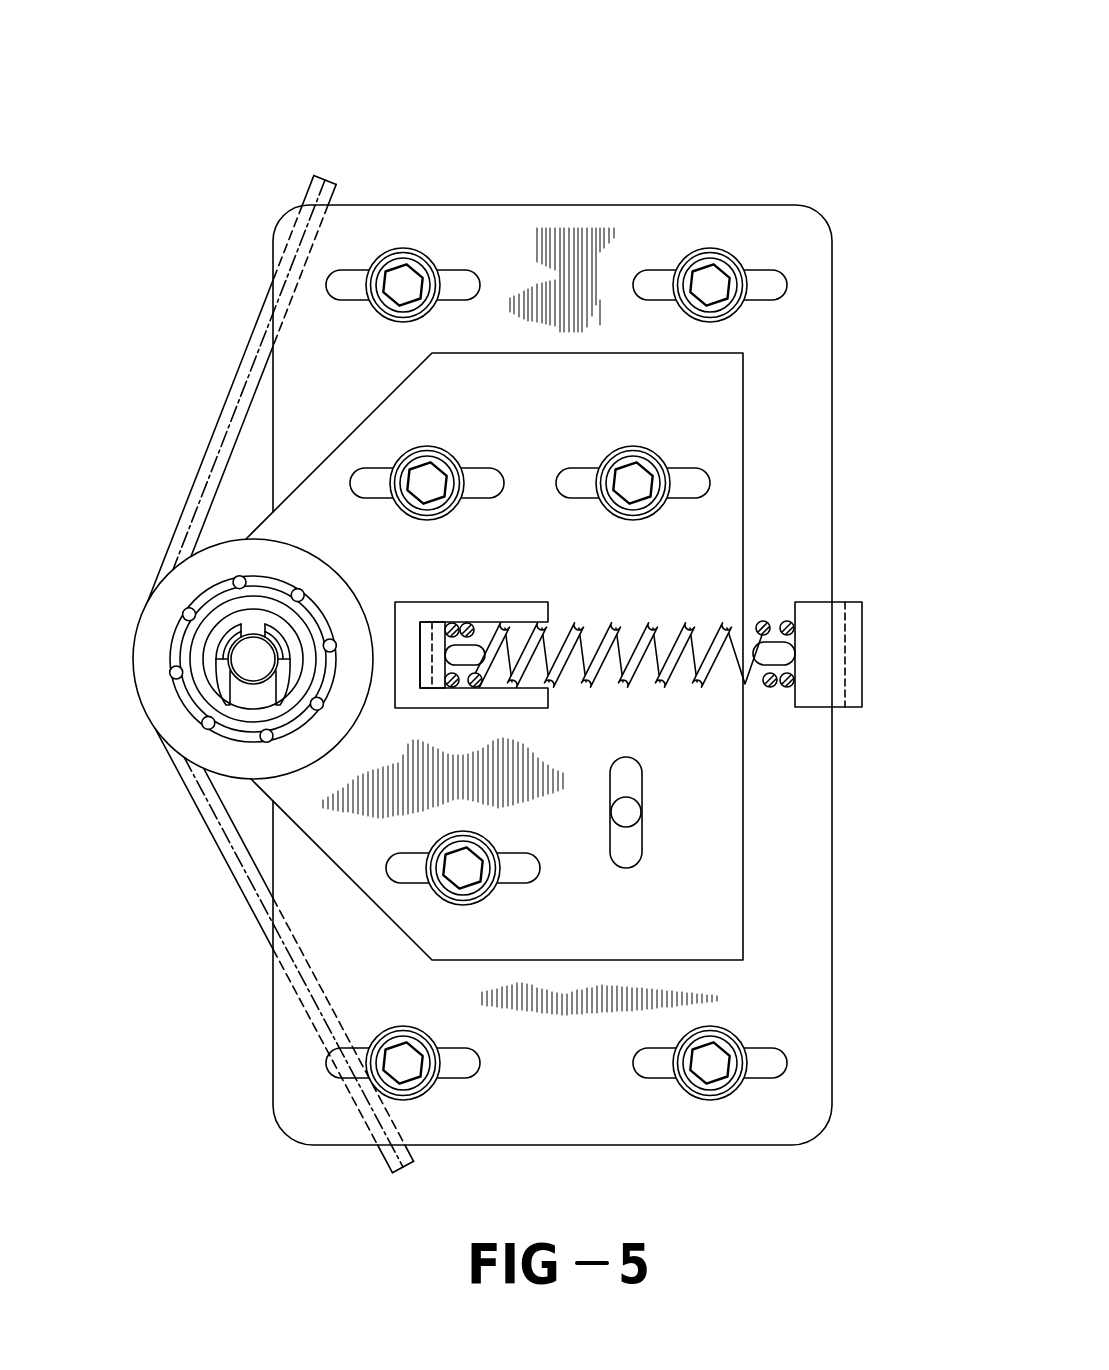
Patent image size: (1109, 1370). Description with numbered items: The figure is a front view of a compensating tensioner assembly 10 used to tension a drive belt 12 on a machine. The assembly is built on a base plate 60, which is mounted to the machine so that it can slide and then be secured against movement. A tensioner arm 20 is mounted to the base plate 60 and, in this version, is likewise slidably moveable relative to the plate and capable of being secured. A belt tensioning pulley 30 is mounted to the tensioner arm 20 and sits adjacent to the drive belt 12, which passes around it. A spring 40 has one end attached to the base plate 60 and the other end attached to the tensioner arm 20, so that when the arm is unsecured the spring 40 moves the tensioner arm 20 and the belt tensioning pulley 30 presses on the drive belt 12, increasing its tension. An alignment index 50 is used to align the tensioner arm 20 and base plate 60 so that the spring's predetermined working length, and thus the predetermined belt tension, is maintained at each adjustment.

The compensating tensioner assembly 10 is at (489, 587).
The drive belt 12 is at (214, 830).
The tensioner arm 20 is at (705, 570).
The belt tensioning pulley 30 is at (175, 612).
The spring 40 is at (667, 687).
The alignment index 50 is at (662, 826).
The base plate 60 is at (765, 337).